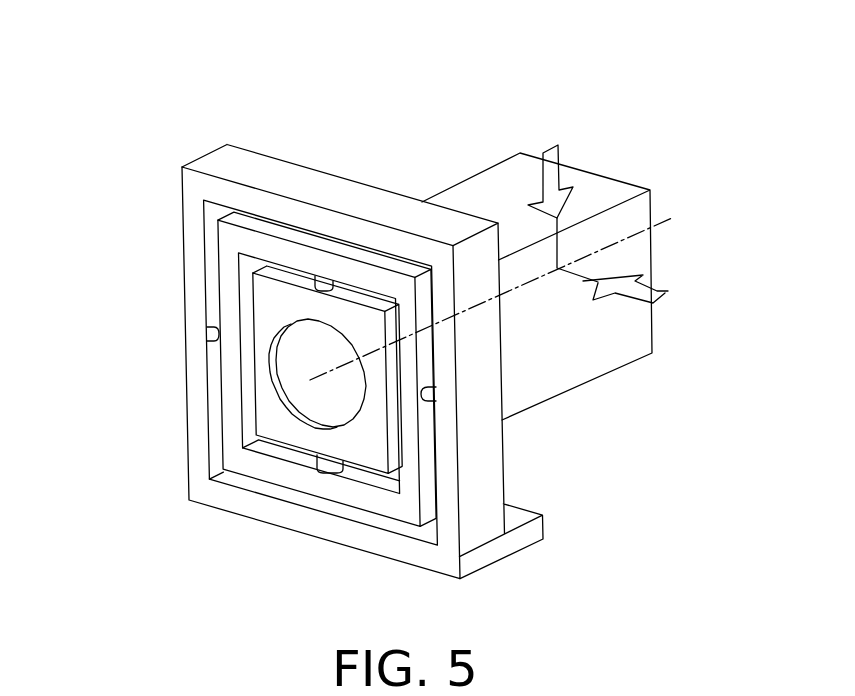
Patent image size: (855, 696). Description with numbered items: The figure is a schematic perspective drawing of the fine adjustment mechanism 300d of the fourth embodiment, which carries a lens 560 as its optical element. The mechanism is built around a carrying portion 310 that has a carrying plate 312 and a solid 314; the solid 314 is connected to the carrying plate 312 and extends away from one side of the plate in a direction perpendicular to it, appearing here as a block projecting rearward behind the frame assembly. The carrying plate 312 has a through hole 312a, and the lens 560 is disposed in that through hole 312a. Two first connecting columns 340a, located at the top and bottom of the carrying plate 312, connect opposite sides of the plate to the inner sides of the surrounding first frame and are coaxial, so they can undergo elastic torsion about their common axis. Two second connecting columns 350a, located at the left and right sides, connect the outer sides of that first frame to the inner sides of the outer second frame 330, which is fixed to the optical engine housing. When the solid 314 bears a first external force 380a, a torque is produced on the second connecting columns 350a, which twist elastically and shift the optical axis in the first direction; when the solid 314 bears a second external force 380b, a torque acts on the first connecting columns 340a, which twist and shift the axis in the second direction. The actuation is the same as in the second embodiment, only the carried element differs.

The carrying portion 310 is at (491, 210).
The carrying plate 312 is at (359, 313).
The through hole 312a is at (337, 313).
The solid 314 is at (501, 184).
The second frame 330 is at (490, 472).
The first connecting columns 340a is at (330, 277).
The second connecting columns 350a is at (207, 334).
The lens 560 is at (300, 352).
The first external force 380a is at (553, 174).
The second external force 380b is at (668, 292).
The fine adjustment mechanism 300d is at (776, 570).